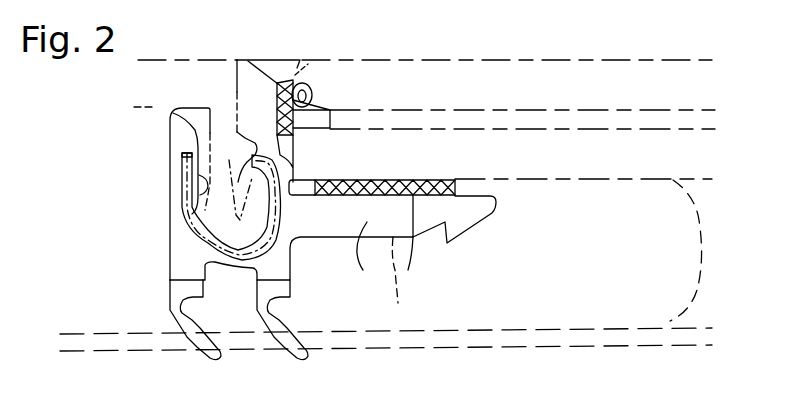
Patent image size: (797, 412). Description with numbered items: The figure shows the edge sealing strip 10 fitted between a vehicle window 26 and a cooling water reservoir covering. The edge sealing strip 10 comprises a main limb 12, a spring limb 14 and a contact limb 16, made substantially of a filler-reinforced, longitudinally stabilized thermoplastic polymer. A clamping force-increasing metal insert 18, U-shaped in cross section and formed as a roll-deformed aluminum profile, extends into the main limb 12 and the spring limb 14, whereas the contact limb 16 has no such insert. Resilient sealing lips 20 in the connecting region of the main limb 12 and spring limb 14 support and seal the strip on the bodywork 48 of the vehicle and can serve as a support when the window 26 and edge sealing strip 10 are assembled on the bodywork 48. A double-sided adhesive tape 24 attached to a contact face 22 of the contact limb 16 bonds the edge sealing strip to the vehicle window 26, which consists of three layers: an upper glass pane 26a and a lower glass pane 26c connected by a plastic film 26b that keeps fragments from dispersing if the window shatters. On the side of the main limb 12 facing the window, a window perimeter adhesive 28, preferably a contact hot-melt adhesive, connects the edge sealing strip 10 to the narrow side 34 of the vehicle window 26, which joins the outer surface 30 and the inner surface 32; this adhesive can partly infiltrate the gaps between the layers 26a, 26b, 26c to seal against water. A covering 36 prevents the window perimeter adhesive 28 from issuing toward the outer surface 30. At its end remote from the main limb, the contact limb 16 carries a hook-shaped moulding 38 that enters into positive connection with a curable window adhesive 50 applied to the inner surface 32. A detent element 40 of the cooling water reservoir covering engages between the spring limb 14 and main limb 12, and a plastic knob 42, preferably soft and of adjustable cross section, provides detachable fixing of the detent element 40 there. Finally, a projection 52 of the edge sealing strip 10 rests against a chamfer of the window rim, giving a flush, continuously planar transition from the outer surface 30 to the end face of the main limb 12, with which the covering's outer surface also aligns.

The edge sealing strip 10 is at (75, 214).
The main limb 12 is at (237, 58).
The spring limb 14 is at (187, 198).
The contact limb 16 is at (372, 263).
The clamping force-increasing metal insert 18 is at (180, 158).
The resilient sealing lips 20 is at (193, 347).
The contact face 22 is at (480, 195).
The double-sided adhesive tape 24 is at (300, 206).
The vehicle window 26 is at (673, 48).
The upper glass pane 26a is at (705, 86).
The plastic film 26b is at (705, 119).
The lower glass pane 26c is at (705, 161).
The window perimeter adhesive 28 is at (245, 64).
The outer surface 30 is at (555, 58).
The inner surface 32 is at (592, 180).
The narrow side 34 is at (327, 110).
The covering 36 is at (299, 96).
The hook-shaped moulding 38 is at (467, 223).
The detent element 40 is at (223, 143).
The plastic knob 42 is at (193, 207).
The bodywork 48 is at (693, 331).
The curable window adhesive 50 is at (697, 217).
The projection 52 is at (284, 68).